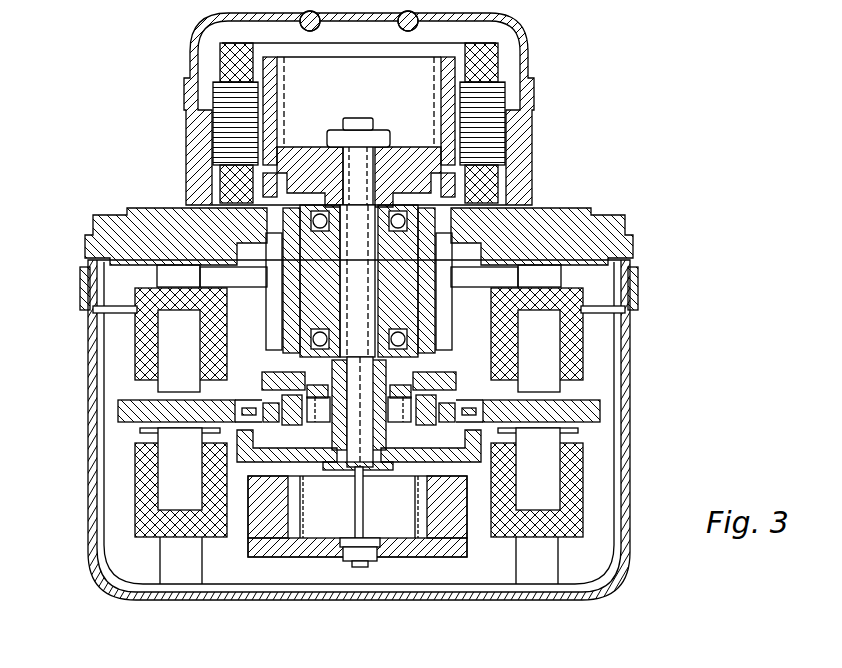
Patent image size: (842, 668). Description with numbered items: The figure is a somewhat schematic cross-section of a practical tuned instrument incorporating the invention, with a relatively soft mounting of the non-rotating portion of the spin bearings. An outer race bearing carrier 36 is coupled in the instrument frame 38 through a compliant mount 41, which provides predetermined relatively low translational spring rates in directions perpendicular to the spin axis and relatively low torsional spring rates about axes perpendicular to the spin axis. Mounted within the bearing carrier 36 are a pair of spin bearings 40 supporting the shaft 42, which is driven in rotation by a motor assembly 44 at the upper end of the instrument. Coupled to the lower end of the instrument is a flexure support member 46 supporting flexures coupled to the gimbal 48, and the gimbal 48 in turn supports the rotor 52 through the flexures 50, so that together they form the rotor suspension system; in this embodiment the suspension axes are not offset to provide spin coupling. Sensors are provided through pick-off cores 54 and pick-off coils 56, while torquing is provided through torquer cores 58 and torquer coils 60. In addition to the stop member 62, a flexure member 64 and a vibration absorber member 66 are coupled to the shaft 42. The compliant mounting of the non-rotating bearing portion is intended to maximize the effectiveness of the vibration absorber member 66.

The outer race bearing carrier 36 is at (470, 240).
The instrument frame 38 is at (148, 212).
The spin bearings 40 is at (312, 210).
The compliant mount 41 is at (452, 276).
The shaft 42 is at (353, 284).
The motor assembly 44 is at (487, 38).
The flexure support member 46 is at (440, 375).
The gimbal 48 is at (292, 422).
The flexures 50 is at (247, 400).
The rotor 52 is at (125, 408).
The pick-off cores 54 is at (167, 353).
The pick-off coils 56 is at (147, 308).
The torquer cores 58 is at (170, 482).
The torquer coils 60 is at (140, 452).
The stop member 62 is at (247, 458).
The flexure member 64 is at (362, 520).
The vibration absorber member 66 is at (453, 553).